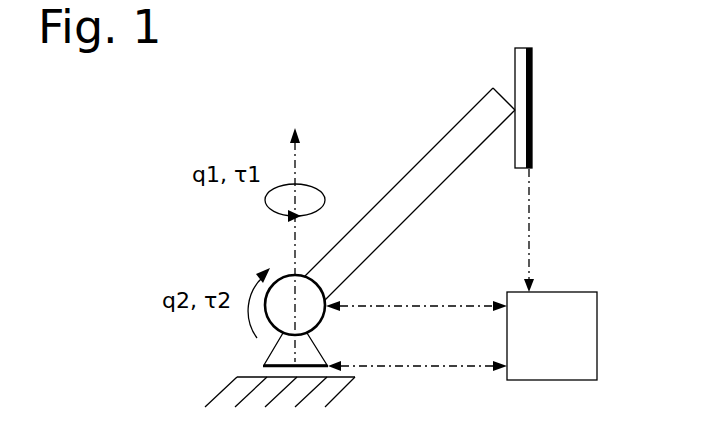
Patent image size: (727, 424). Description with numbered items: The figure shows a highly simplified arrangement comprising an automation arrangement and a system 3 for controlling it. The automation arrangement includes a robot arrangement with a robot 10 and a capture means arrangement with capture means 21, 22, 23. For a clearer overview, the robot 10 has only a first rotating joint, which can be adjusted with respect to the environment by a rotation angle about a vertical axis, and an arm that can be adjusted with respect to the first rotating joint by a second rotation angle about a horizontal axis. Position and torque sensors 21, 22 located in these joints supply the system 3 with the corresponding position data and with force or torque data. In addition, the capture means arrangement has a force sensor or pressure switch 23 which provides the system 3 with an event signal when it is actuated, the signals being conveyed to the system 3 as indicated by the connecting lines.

The robot 10 is at (366, 98).
The position and torque sensor 21 is at (265, 365).
The position and torque sensor 22 is at (320, 327).
The force sensor or pressure switch 23 is at (532, 90).
The system 3 is at (543, 349).